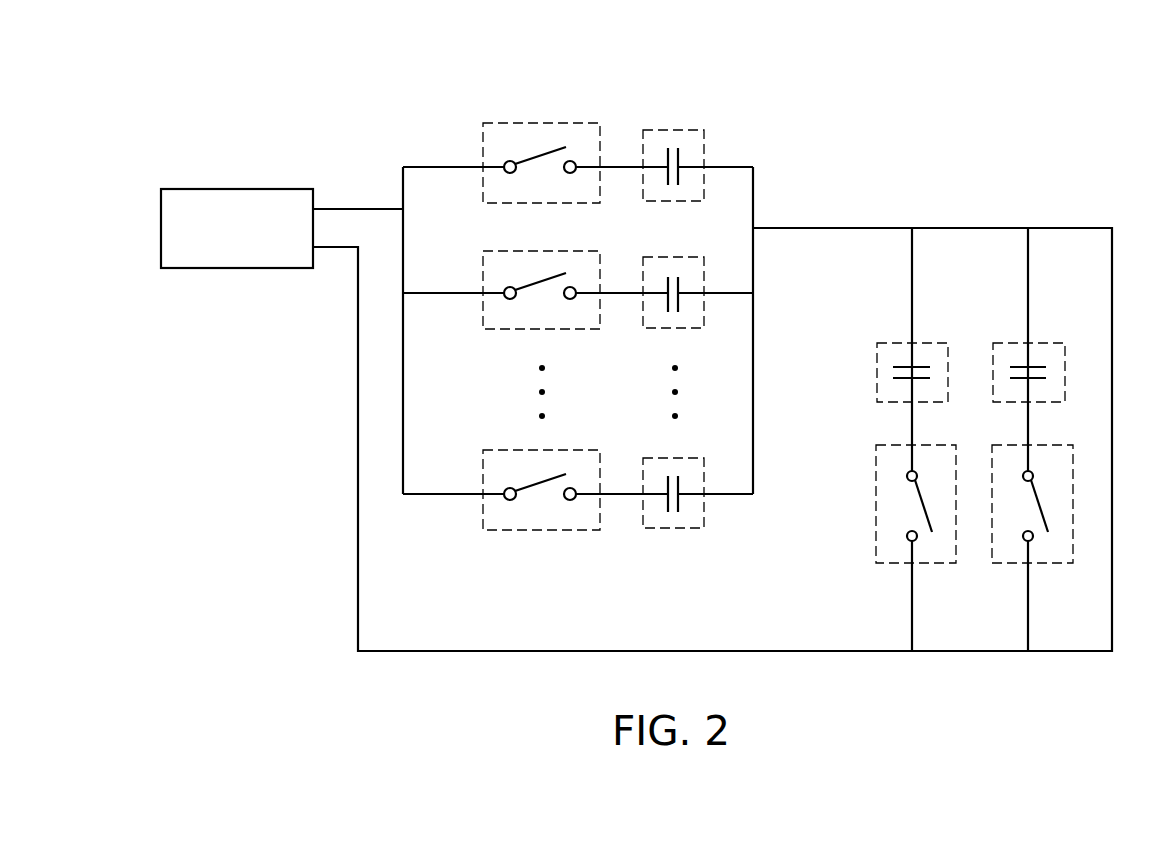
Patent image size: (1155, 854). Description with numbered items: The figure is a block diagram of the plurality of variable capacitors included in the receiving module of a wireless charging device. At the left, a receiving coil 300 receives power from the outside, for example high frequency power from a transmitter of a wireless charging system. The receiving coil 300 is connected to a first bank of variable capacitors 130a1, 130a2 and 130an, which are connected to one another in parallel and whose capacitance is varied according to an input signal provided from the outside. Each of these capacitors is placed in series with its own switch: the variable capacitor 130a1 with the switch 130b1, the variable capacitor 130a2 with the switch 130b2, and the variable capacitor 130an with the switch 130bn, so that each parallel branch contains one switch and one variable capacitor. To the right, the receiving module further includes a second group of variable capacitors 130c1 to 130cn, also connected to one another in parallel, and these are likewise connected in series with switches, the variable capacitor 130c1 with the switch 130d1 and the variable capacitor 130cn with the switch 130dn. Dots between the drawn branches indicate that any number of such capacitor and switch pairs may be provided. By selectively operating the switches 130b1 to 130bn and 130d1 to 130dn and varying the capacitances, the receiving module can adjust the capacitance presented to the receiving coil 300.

The receiving coil 300 is at (217, 189).
The variable capacitor 130a1 is at (672, 130).
The variable capacitor 130a2 is at (704, 318).
The variable capacitor 130an is at (704, 516).
The switch 130b1 is at (517, 122).
The switch 130b2 is at (563, 329).
The switch 130bn is at (563, 530).
The variable capacitor 130c1 is at (925, 343).
The variable capacitor 130cn is at (1045, 343).
The switch 130d1 is at (925, 563).
The switch 130dn is at (1045, 563).